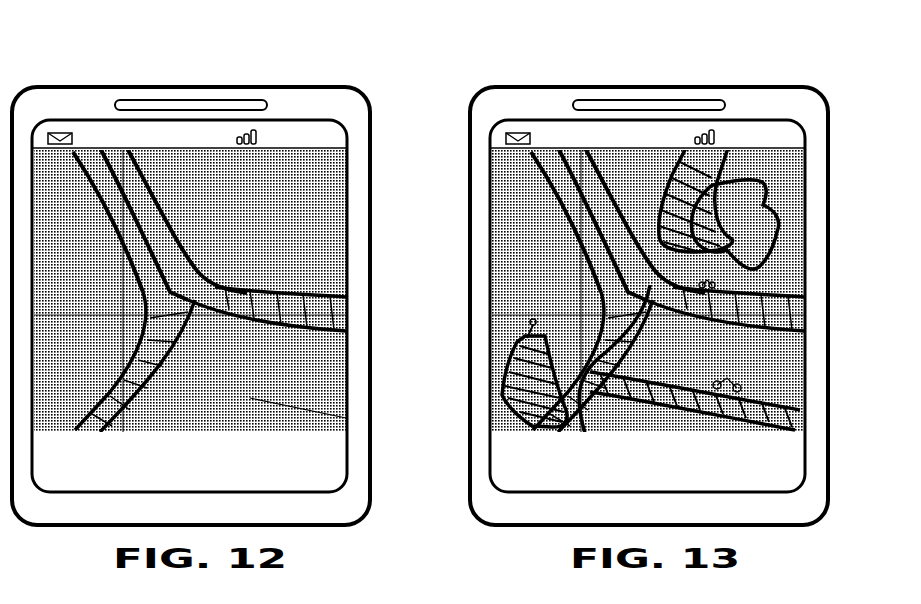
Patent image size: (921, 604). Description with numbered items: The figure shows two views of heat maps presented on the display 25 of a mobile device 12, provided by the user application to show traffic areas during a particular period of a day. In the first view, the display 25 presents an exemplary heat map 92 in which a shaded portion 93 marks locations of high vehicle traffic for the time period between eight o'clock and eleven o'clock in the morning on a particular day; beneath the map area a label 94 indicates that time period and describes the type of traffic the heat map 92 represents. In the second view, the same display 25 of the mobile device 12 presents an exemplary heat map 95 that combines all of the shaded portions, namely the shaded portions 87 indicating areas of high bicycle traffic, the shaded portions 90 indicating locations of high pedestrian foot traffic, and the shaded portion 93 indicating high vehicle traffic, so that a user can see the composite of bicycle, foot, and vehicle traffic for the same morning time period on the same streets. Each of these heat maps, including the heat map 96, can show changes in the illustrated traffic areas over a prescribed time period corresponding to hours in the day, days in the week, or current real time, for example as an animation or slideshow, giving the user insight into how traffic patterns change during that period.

In FIG. 12, the mobile device 12 is at (84, 102).
In FIG. 13, the mobile device 12 is at (590, 97).
In FIG. 12, the display 25 is at (352, 197).
In FIG. 13, the display 25 is at (484, 428).
In FIG. 12, the heat map 92 is at (333, 232).
In FIG. 12, the shaded portion 93 is at (327, 302).
In FIG. 13, the shaded portion 93 is at (572, 195).
In FIG. 12, the shaded portions 87 is at (291, 407).
In FIG. 13, the shaded portions 87 is at (662, 167).
In FIG. 12, the label 94 is at (321, 477).
In FIG. 13, the heat map 95 is at (500, 295).
In FIG. 13, the shaded portions 90 is at (723, 187).
In FIG. 13, the heat map 96 is at (511, 477).